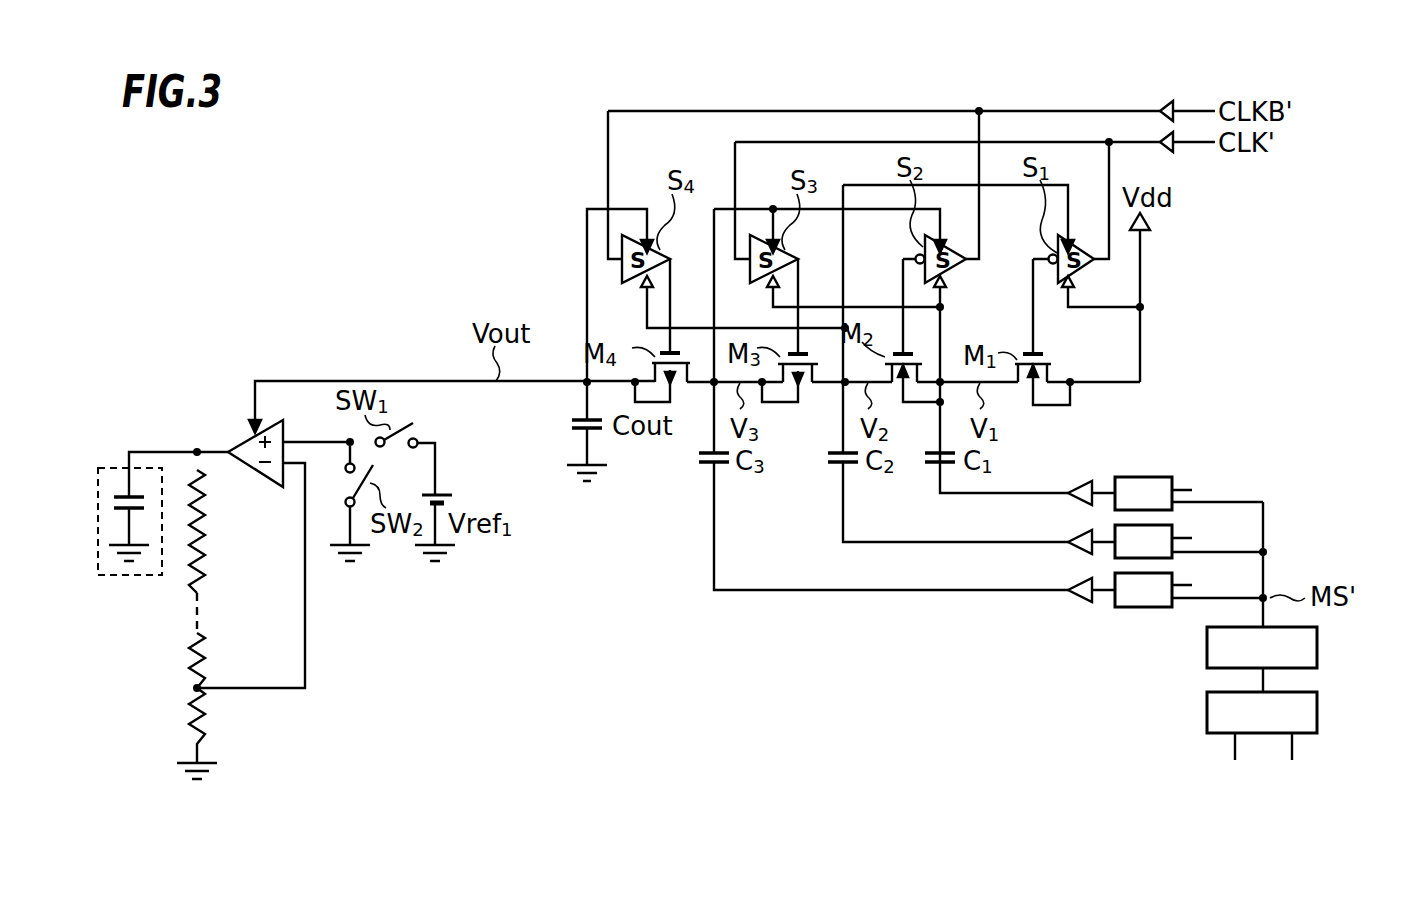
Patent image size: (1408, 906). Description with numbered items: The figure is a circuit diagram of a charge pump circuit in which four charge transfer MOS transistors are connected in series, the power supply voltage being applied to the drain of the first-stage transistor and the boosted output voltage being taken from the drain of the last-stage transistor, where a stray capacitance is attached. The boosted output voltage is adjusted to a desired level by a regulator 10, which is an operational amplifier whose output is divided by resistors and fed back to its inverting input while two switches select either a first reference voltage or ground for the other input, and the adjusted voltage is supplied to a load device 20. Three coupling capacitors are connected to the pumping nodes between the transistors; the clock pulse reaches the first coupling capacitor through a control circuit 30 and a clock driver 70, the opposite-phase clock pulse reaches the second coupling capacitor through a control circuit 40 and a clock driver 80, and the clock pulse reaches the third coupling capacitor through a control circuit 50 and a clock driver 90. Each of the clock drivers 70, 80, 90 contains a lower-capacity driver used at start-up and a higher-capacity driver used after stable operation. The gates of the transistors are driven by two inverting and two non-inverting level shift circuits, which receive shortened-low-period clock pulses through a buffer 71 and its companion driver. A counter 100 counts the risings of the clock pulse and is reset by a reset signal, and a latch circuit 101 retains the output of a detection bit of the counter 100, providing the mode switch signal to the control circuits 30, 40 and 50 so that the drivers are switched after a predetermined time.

The regulator 10 is at (240, 438).
The load device 20 is at (128, 575).
The control circuit 30 is at (1145, 483).
The control circuit 40 is at (1128, 552).
The control circuit 50 is at (1152, 600).
The clock driver 70 is at (1173, 150).
The buffer 71 is at (1163, 103).
The clock driver 80 is at (1080, 531).
The clock driver 90 is at (1080, 580).
The counter 100 is at (1317, 713).
The latch circuit 101 is at (1317, 648).